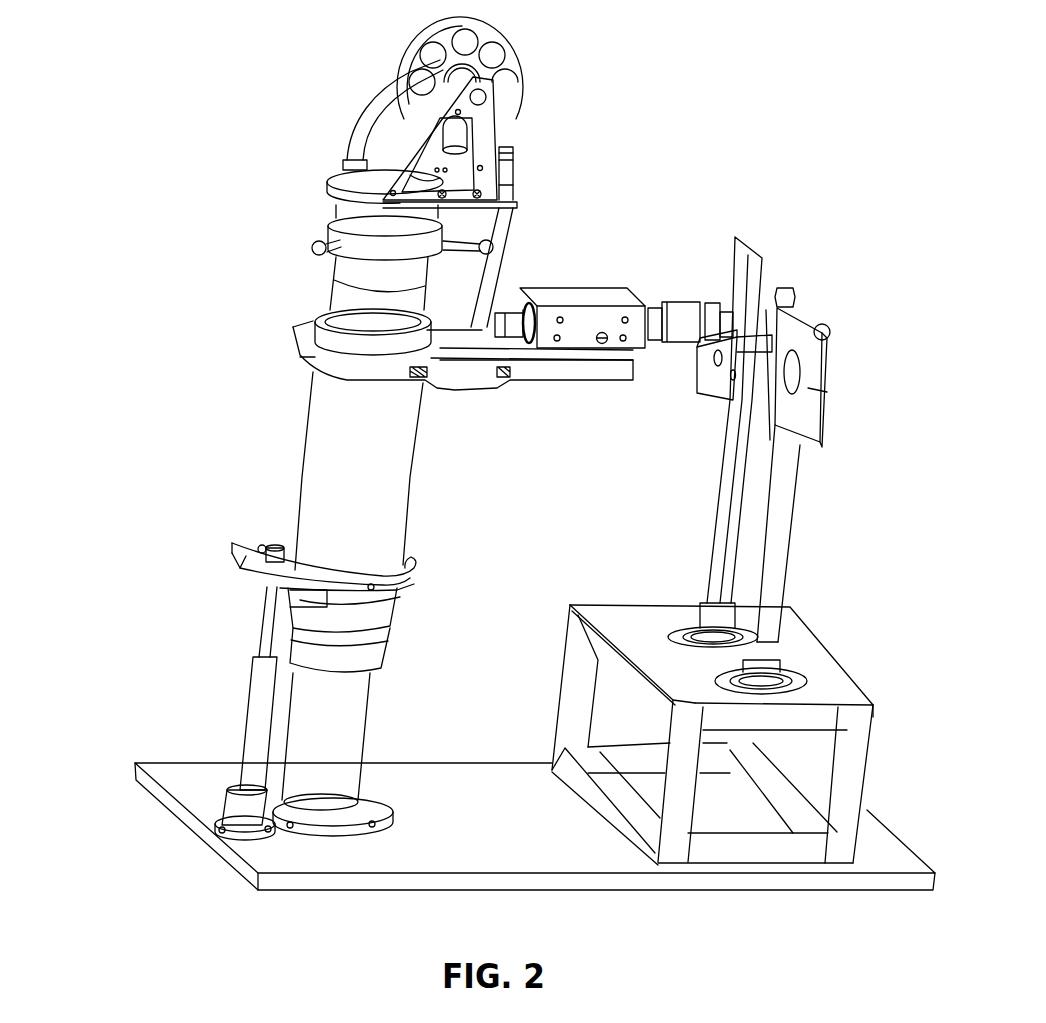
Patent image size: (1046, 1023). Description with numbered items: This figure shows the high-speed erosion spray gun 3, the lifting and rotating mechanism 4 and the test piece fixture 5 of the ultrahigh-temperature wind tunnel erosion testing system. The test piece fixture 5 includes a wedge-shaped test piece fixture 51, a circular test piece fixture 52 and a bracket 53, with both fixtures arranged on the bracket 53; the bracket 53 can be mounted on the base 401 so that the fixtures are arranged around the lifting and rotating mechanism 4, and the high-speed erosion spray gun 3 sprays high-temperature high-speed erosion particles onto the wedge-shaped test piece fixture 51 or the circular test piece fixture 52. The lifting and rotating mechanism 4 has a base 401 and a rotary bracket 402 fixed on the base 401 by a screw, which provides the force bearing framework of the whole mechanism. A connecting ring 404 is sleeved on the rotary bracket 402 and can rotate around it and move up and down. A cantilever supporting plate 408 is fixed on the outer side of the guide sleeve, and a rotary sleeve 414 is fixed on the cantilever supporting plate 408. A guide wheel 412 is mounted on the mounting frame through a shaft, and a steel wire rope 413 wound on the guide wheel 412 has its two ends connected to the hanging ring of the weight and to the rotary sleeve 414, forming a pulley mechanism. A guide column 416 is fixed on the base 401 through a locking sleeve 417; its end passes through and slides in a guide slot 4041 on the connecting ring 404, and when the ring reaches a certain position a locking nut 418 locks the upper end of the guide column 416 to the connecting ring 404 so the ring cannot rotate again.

The high-speed erosion spray gun 3 is at (573, 298).
The lifting and rotating mechanism 4 is at (257, 375).
The test piece fixture 5 is at (803, 263).
The wedge-shaped test piece fixture 51 is at (738, 252).
The circular test piece fixture 52 is at (820, 358).
The bracket 53 is at (830, 690).
The base 401 is at (232, 860).
The rotary bracket 402 is at (355, 738).
The connecting ring 404 is at (240, 562).
The guide slot 4041 is at (262, 548).
The cantilever supporting plate 408 is at (530, 373).
The guide wheel 412 is at (513, 62).
The steel wire rope 413 is at (517, 127).
The rotary sleeve 414 is at (500, 177).
The guide column 416 is at (257, 710).
The locking sleeve 417 is at (222, 795).
The locking nut 418 is at (262, 544).